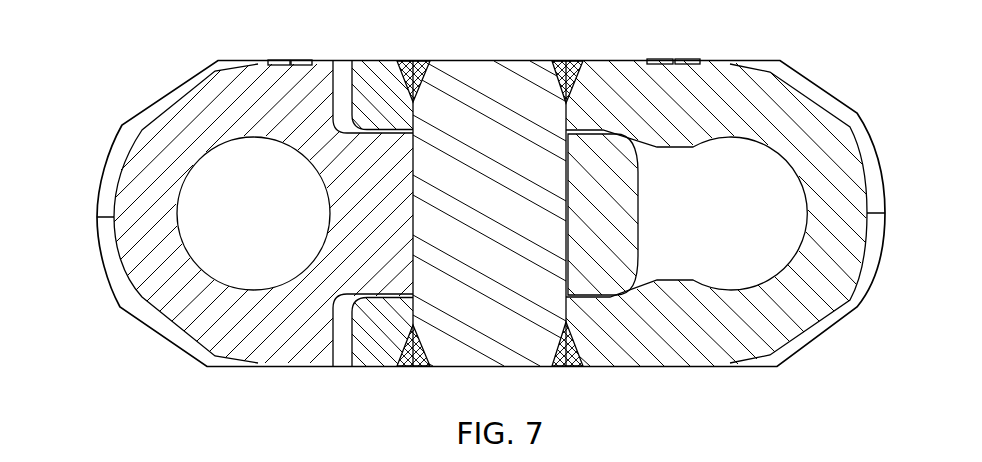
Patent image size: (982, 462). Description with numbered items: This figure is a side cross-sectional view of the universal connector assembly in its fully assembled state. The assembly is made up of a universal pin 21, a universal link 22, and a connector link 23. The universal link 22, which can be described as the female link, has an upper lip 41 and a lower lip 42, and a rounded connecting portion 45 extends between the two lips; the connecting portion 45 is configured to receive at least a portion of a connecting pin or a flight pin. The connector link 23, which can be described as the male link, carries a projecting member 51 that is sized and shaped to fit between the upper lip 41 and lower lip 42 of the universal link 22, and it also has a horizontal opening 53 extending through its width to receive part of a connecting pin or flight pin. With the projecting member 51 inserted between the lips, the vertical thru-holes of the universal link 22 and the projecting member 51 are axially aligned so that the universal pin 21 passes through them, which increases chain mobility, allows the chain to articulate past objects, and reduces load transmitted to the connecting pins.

The universal pin 21 is at (501, 74).
The universal link 22 is at (844, 317).
The connector link 23 is at (97, 255).
The upper lip 41 is at (378, 70).
The lower lip 42 is at (380, 357).
The connecting portion 45 is at (763, 153).
The projecting member 51 is at (632, 213).
The horizontal opening 53 is at (187, 201).